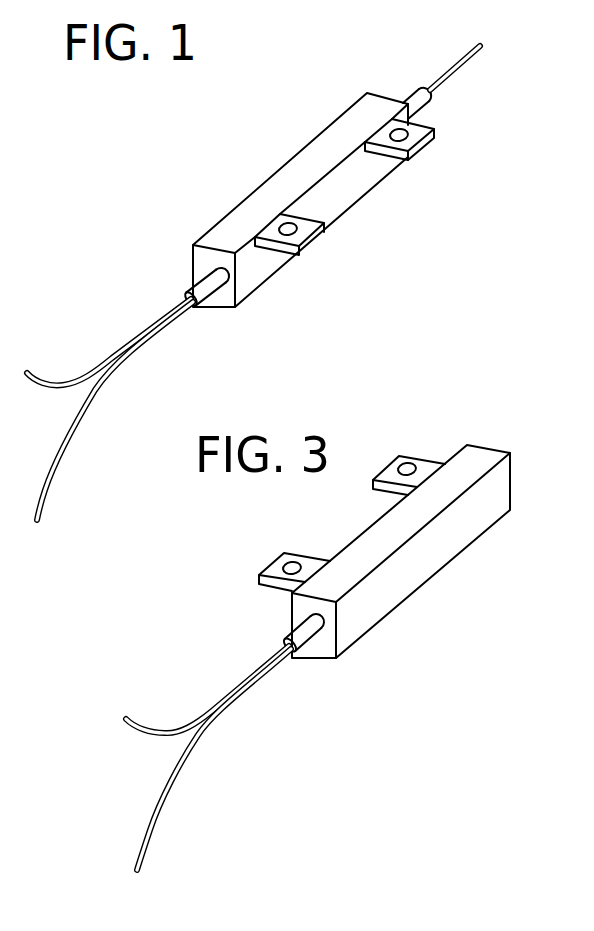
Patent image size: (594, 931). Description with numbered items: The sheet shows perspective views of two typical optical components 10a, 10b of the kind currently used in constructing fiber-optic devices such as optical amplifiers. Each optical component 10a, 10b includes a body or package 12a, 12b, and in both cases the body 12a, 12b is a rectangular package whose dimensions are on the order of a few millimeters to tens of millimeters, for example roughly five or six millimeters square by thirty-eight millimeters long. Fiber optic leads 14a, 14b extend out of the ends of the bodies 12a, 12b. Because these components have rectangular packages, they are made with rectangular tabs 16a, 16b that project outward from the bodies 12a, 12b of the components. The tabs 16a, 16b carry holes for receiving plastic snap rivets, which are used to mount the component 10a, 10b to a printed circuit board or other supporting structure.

In FIG. 1, the optical component 10a is at (290, 283).
In FIG. 1, the body 12a is at (295, 153).
In FIG. 1, the fiber optic lead 14a is at (458, 73).
In FIG. 1, the rectangular tab 16a is at (408, 162).
In FIG. 3, the optical component 10b is at (318, 629).
In FIG. 3, the body 12b is at (435, 573).
In FIG. 3, the fiber optic lead 14b is at (162, 803).
In FIG. 3, the rectangular tab 16b is at (388, 458).